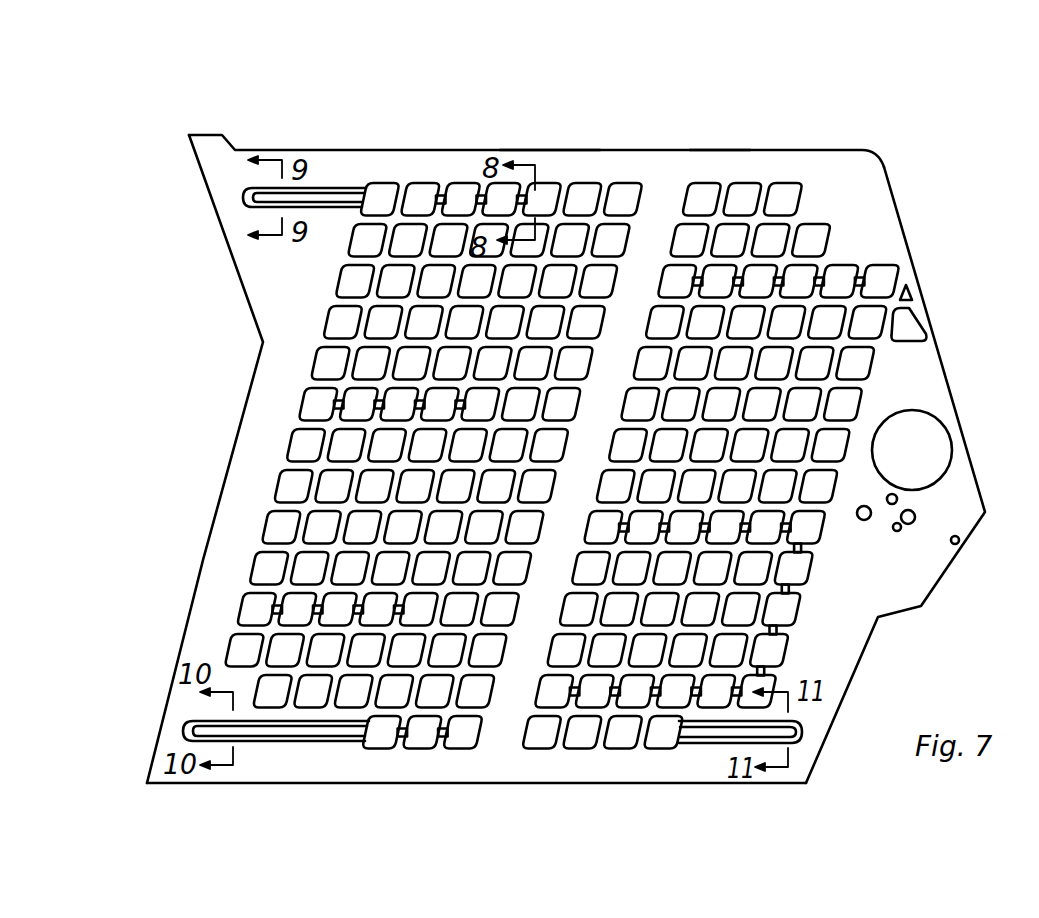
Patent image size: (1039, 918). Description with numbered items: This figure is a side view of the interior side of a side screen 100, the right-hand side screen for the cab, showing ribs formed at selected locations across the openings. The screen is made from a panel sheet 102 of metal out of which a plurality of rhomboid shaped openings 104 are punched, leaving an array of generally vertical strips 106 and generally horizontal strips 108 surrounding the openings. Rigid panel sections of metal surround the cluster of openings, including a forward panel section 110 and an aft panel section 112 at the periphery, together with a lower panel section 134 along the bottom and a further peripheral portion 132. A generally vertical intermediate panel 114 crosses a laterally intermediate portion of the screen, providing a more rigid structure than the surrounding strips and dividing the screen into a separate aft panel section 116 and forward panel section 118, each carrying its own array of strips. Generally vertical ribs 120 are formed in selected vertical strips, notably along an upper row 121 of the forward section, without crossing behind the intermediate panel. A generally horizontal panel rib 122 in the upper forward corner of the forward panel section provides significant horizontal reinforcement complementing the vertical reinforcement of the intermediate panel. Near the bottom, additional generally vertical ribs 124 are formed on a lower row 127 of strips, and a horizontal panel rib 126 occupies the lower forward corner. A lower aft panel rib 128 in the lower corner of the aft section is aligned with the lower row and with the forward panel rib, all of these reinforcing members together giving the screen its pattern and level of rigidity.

The side screen 100 is at (904, 131).
The panel sheet 102 is at (897, 178).
The rhomboid shaped openings 104 is at (325, 362).
The generally vertical strips 106 is at (257, 643).
The generally horizontal strips 108 is at (270, 512).
The forward panel section 110 is at (247, 393).
The aft panel section 112 is at (953, 397).
The intermediate panel 114 is at (633, 278).
The aft panel section 116 is at (800, 152).
The forward panel section 118 is at (547, 152).
The generally vertical ribs 120 is at (479, 190).
The upper row 121 is at (240, 197).
The generally horizontal panel rib 122 is at (245, 188).
The generally vertical ribs 124 is at (398, 738).
The panel rib 126 is at (188, 721).
The lower row 127 is at (185, 730).
The lower aft panel rib 128 is at (805, 738).
The edge portion 132 is at (718, 151).
The lower panel section 134 is at (530, 783).